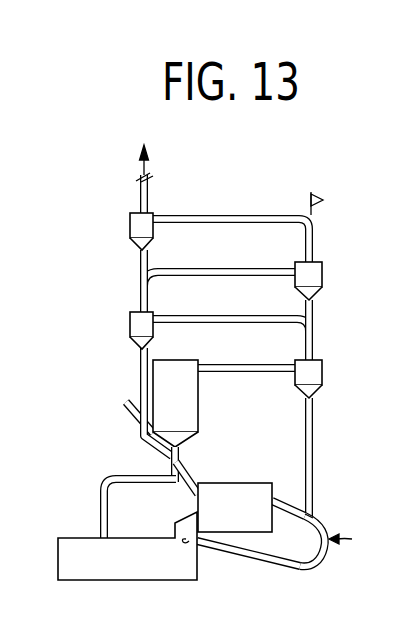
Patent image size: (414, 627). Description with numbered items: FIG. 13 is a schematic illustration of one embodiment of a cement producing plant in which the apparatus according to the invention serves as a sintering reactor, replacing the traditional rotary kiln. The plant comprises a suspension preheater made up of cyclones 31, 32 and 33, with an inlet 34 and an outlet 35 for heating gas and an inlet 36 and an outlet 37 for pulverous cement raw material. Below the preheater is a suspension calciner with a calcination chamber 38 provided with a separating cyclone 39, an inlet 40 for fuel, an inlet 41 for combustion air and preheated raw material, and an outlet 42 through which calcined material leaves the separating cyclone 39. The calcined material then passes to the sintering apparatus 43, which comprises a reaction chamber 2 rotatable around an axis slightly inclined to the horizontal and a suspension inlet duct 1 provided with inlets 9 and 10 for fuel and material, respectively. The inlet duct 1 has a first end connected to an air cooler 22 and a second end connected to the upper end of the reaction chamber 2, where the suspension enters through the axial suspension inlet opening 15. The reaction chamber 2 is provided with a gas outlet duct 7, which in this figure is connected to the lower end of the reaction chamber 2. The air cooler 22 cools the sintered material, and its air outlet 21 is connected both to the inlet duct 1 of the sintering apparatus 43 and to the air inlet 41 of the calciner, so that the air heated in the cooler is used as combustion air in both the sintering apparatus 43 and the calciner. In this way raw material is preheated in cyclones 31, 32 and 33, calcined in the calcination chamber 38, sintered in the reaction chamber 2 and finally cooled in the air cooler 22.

The suspension inlet duct 1 is at (323, 561).
The reaction chamber 2 is at (235, 507).
The gas outlet duct 7 is at (188, 479).
The inlet for fuel 9 is at (352, 539).
The inlet for material 10 is at (313, 520).
The axial suspension inlet opening 15 is at (287, 502).
The air outlet 21 is at (173, 531).
The air cooler 22 is at (112, 565).
The cyclone 31 is at (135, 228).
The cyclone 32 is at (322, 276).
The cyclone 33 is at (130, 324).
The inlet for heating gas 34 is at (313, 342).
The outlet for heating gas 35 is at (140, 194).
The inlet for pulverous cement raw material 36 is at (313, 213).
The outlet for pulverous cement raw material 37 is at (140, 362).
The calcination chamber 38 is at (188, 398).
The separating cyclone 39 is at (322, 373).
The inlet for fuel 40 is at (131, 401).
The inlet for combustion air and preheated raw material 41 is at (165, 463).
The outlet for calcined material 42 is at (313, 428).
The sintering apparatus 43 is at (298, 546).